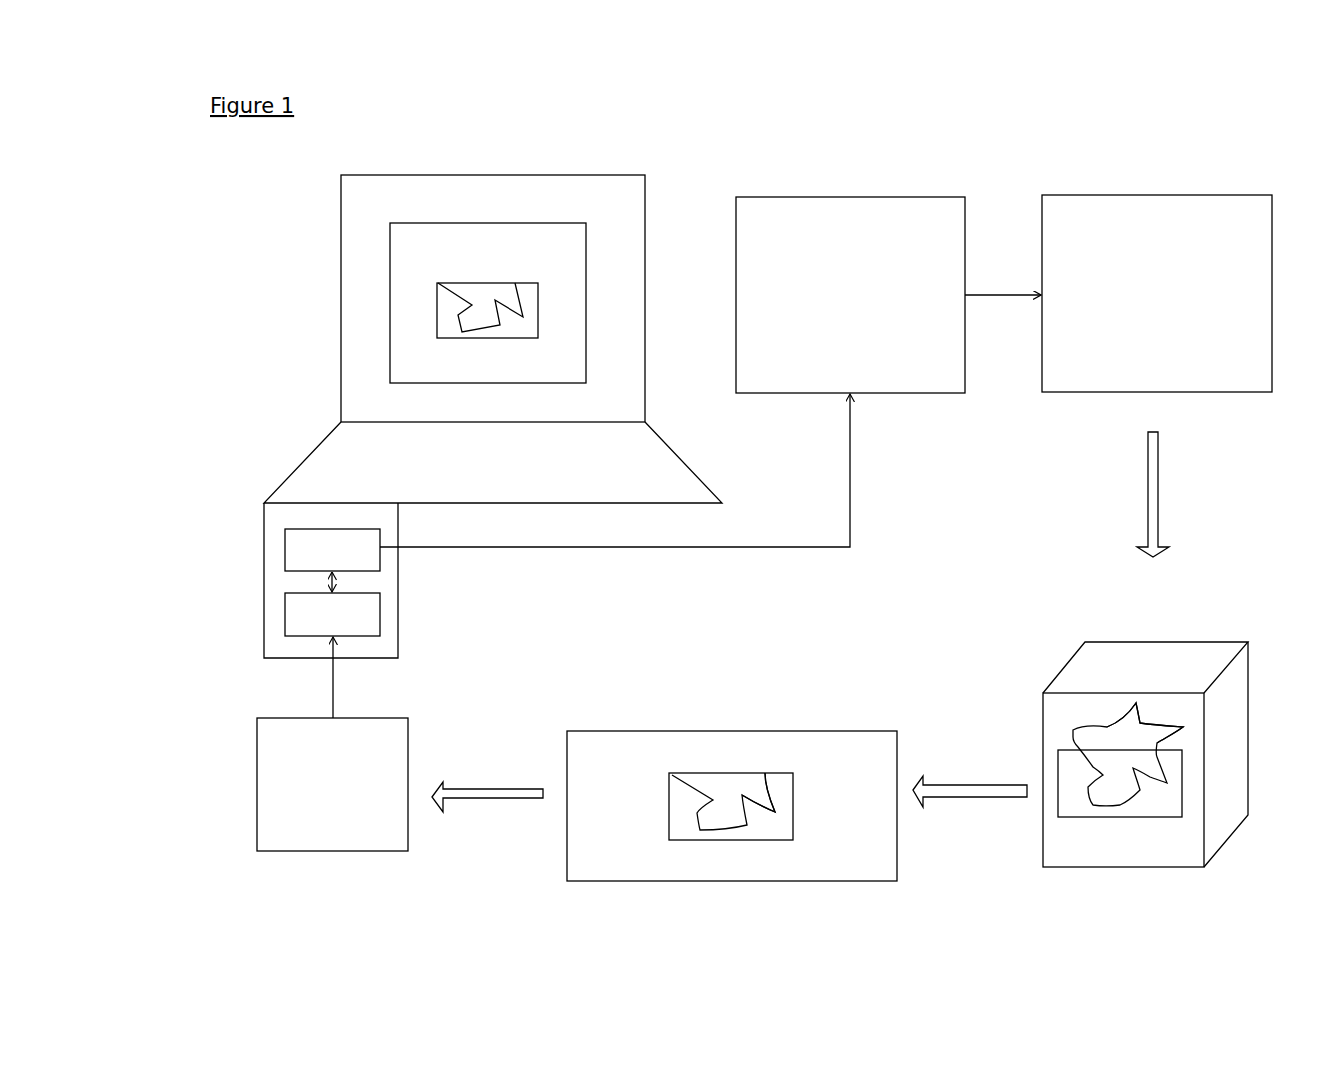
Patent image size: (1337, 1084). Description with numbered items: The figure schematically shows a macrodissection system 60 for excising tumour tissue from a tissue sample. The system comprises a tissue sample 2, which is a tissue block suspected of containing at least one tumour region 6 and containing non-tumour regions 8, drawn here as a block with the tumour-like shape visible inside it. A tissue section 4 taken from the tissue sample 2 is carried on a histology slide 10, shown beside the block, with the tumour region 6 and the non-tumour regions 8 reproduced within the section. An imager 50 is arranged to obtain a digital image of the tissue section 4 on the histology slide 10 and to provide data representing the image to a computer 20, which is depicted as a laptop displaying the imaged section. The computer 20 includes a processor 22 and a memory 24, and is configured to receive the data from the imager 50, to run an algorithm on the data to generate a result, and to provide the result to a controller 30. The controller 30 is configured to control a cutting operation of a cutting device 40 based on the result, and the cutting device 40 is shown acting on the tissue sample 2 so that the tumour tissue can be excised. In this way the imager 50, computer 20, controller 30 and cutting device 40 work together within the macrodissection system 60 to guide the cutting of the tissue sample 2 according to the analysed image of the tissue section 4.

The tissue sample 2 is at (1208, 640).
The tissue section 4 is at (1153, 792).
The tumour region 6 is at (1145, 737).
The non-tumour region 8 is at (1172, 824).
The histology slide 10 is at (586, 841).
The computer 20 is at (502, 174).
The processor 22 is at (284, 544).
The memory 24 is at (284, 617).
The controller 30 is at (853, 196).
The cutting device 40 is at (1166, 194).
The imager 50 is at (257, 787).
The macrodissection system 60 is at (1060, 124).